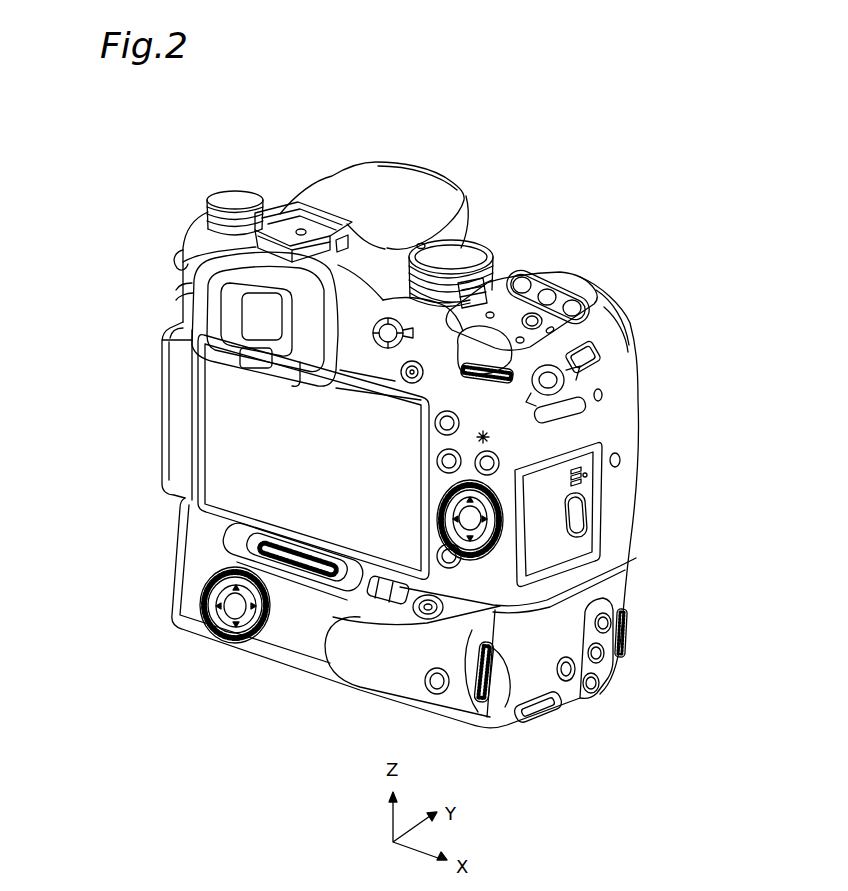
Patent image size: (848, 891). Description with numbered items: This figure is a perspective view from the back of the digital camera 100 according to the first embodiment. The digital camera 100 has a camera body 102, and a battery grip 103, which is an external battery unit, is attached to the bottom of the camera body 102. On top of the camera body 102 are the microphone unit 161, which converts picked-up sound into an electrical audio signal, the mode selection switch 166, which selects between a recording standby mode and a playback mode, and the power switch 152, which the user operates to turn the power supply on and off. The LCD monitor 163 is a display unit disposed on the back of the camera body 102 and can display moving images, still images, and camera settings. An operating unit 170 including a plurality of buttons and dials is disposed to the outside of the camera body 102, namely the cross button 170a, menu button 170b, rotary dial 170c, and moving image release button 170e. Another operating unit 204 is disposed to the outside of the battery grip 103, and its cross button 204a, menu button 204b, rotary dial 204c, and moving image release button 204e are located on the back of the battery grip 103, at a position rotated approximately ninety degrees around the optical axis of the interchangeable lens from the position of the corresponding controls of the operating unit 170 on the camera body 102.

The digital camera 100 is at (80, 148).
The camera body 102 is at (153, 378).
The battery grip 103 is at (163, 543).
The power switch 152 is at (490, 283).
The microphone unit 161 is at (342, 216).
The LCD monitor 163 is at (216, 421).
The mode selection switch 166 is at (465, 259).
The operating unit 170 is at (702, 378).
The cross button 170a is at (487, 512).
The menu button 170b is at (480, 526).
The rotary dial 170c is at (502, 539).
The moving image release button 170e is at (424, 377).
The operating unit 204 is at (141, 665).
The cross button 204a is at (213, 640).
The menu button 204b is at (228, 645).
The rotary dial 204c is at (246, 648).
The moving image release button 204e is at (420, 612).